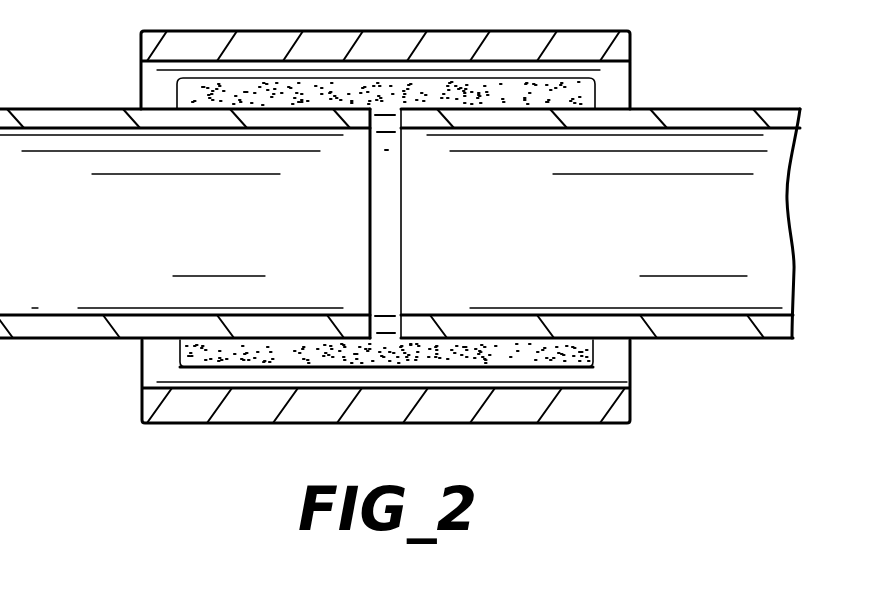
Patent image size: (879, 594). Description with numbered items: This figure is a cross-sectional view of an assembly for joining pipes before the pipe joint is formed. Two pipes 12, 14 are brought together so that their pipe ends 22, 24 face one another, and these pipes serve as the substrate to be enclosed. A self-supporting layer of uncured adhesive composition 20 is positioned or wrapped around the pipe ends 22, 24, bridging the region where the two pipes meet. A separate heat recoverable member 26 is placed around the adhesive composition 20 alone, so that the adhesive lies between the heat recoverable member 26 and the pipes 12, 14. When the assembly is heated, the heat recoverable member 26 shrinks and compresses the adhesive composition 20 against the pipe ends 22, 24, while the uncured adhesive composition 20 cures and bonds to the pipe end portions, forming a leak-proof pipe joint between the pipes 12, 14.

The pipe 12 is at (98, 327).
The pipe 14 is at (692, 327).
The uncured adhesive composition 20 is at (593, 93).
The pipe end 22 is at (376, 254).
The pipe end 24 is at (400, 207).
The heat recoverable member 26 is at (141, 44).